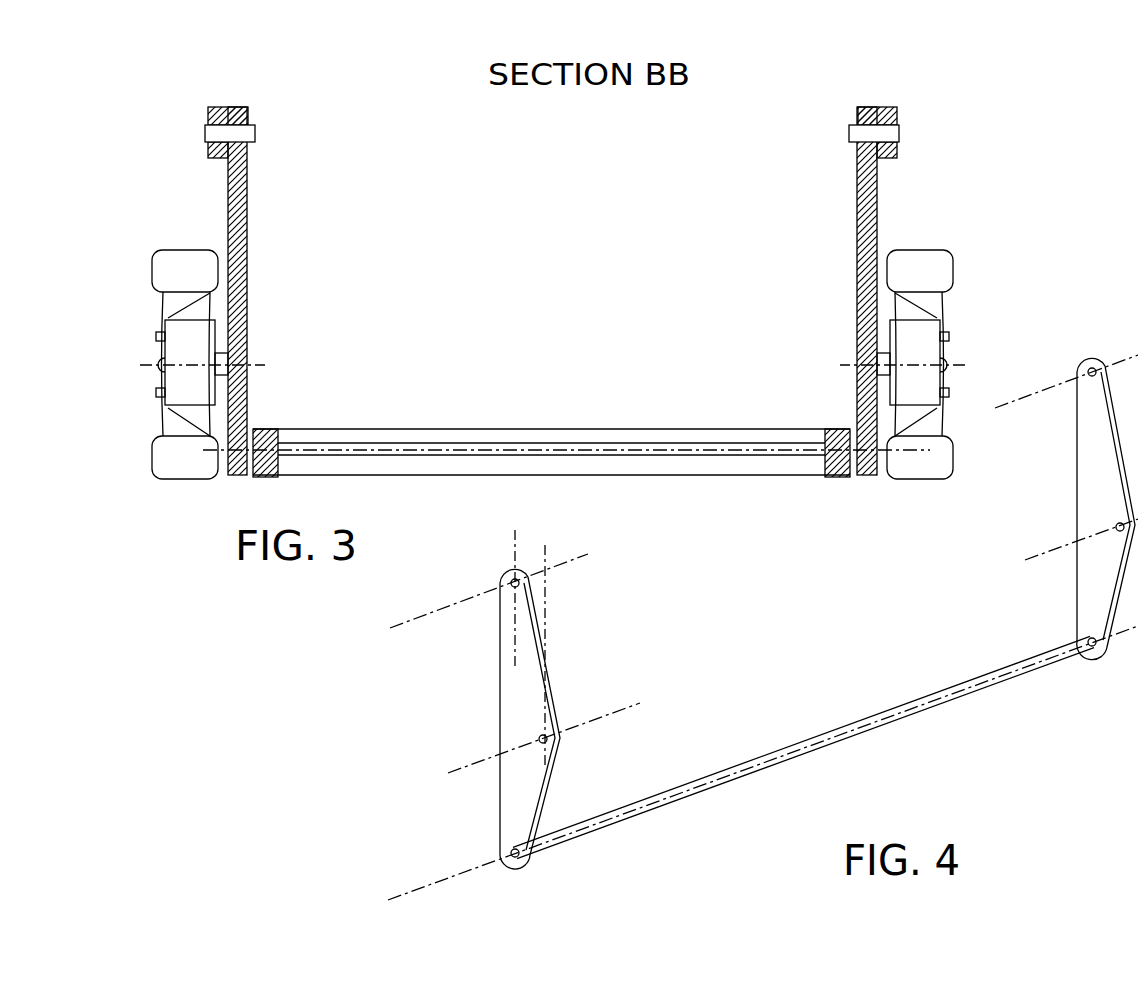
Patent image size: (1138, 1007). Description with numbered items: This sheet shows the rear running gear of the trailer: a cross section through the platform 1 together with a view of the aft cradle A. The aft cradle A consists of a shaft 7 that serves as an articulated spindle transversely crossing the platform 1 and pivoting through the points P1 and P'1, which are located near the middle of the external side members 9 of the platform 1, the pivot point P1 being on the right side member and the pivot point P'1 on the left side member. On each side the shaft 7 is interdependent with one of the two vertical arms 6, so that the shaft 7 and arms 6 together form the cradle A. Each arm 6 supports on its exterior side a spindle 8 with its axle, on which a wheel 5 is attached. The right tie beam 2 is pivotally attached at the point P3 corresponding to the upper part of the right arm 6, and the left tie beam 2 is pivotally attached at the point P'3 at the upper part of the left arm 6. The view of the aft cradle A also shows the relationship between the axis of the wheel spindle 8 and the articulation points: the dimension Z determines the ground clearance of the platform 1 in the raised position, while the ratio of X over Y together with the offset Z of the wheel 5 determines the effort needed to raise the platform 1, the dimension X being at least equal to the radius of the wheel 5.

In FIG. 3, the platform 1 is at (427, 434).
In FIG. 3, the tie beam 2 is at (218, 152).
In FIG. 3, the wheel 5 is at (188, 452).
In FIG. 3, the vertical arm 6 is at (236, 280).
In FIG. 4, the vertical arm 6 is at (1100, 580).
In FIG. 3, the shaft 7 is at (526, 451).
In FIG. 4, the shaft 7 is at (867, 726).
In FIG. 3, the spindle 8 is at (915, 347).
In FIG. 3, the external side member 9 is at (267, 440).
In FIG. 3, the pivot point P1 is at (262, 412).
In FIG. 3, the pivot point P3 is at (247, 133).
In FIG. 3, the pivot point P'1 is at (897, 516).
In FIG. 3, the pivot point P'3 is at (971, 172).
In FIG. 4, the aft cradle A is at (771, 707).
In FIG. 4, the dimension X is at (467, 768).
In FIG. 4, the dimension Y is at (414, 621).
In FIG. 4, the dimension Z is at (556, 560).